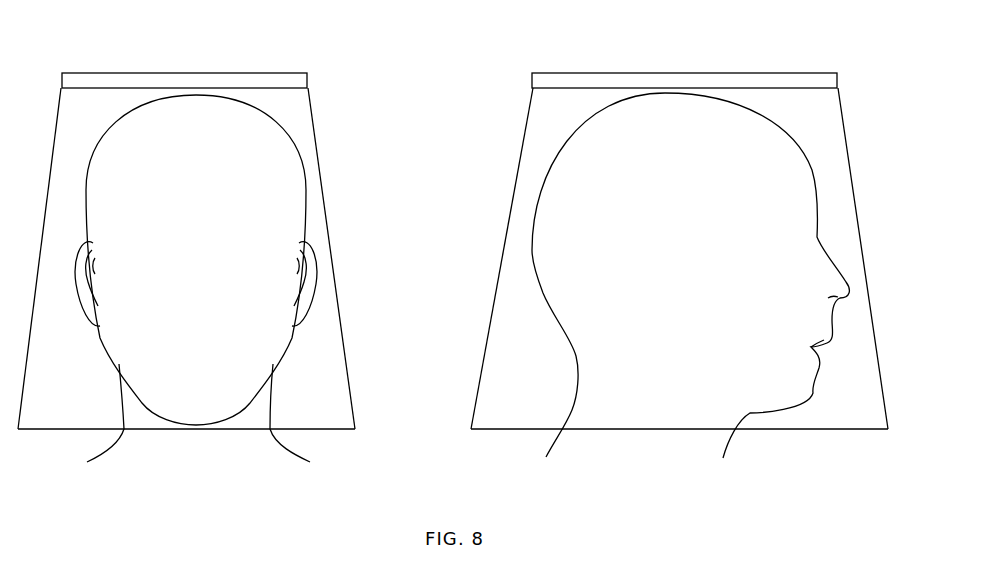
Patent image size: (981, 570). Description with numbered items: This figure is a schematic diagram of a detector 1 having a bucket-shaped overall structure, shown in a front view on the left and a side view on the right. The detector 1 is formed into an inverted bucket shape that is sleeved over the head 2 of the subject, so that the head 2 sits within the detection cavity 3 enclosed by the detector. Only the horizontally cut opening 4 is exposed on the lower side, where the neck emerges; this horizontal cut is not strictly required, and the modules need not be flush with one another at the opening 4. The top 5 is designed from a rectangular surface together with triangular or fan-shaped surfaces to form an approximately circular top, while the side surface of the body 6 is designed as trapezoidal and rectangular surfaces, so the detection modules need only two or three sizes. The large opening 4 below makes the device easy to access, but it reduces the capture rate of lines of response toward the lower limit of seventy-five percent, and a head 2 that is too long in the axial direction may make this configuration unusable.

The detector 1 is at (313, 115).
The head 2 is at (270, 213).
The detection cavity 3 is at (330, 300).
The opening 4 is at (303, 432).
The top 5 is at (788, 82).
The body 6 is at (853, 187).